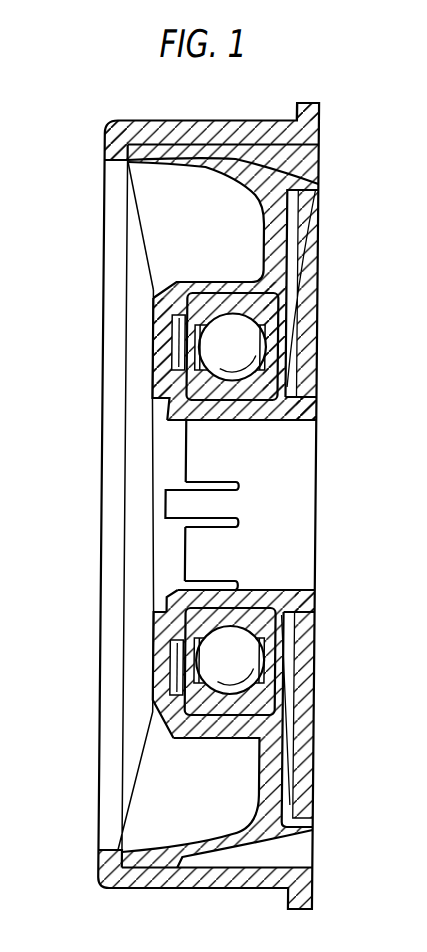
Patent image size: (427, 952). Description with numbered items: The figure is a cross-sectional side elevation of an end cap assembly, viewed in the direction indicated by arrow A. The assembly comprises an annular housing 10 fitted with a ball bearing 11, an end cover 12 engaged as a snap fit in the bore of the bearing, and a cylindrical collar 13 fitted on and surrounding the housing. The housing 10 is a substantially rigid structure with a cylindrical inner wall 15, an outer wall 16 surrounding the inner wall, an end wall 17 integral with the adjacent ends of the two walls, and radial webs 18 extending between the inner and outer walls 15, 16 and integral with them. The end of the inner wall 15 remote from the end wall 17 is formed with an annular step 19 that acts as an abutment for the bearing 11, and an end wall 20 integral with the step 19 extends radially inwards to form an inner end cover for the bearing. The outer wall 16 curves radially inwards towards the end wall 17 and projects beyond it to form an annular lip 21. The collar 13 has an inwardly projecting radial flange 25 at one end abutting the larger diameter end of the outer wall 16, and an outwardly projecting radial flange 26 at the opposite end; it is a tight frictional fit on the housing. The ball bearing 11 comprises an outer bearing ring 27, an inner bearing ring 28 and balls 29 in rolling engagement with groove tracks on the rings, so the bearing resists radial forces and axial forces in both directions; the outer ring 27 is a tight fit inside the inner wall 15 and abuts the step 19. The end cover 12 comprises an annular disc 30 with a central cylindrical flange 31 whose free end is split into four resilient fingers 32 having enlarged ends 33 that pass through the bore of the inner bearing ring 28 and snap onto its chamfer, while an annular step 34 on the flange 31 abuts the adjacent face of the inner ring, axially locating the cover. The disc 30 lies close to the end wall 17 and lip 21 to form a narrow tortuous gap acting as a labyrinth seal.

The annular housing 10 is at (150, 276).
The ball bearing 11 is at (270, 334).
The end cover 12 is at (322, 233).
The cylindrical collar 13 is at (224, 121).
The cylindrical inner wall 15 is at (200, 275).
The outer wall 16 is at (207, 166).
The end wall 17 is at (275, 228).
The radial webs 18 is at (142, 228).
The annular step 19 is at (160, 316).
The end wall 20 is at (160, 349).
The annular lip 21 is at (322, 173).
The inwardly projecting radial flange 25 is at (111, 146).
The outwardly projecting radial flange 26 is at (321, 110).
The outer bearing ring 27 is at (277, 305).
The inner bearing ring 28 is at (287, 398).
The balls 29 is at (262, 354).
The annular disc 30 is at (323, 686).
The cylindrical flange 31 is at (259, 421).
The resilient fingers 32 is at (192, 503).
The enlarged ends 33 is at (174, 414).
The annular step 34 is at (324, 414).
The viewing direction A is at (86, 391).